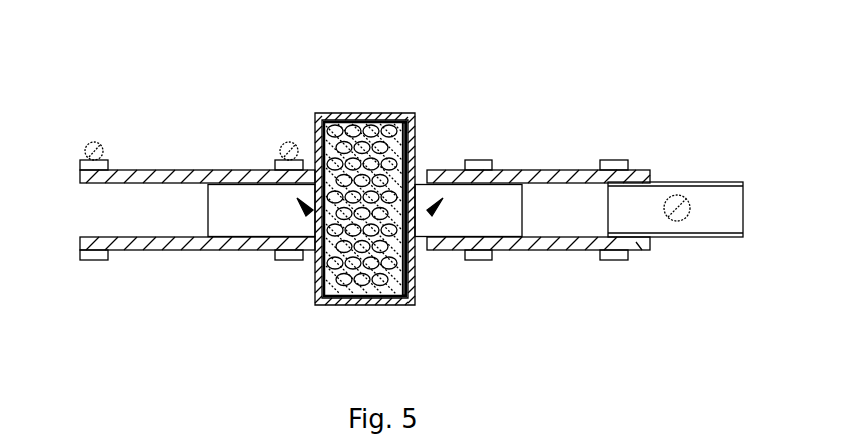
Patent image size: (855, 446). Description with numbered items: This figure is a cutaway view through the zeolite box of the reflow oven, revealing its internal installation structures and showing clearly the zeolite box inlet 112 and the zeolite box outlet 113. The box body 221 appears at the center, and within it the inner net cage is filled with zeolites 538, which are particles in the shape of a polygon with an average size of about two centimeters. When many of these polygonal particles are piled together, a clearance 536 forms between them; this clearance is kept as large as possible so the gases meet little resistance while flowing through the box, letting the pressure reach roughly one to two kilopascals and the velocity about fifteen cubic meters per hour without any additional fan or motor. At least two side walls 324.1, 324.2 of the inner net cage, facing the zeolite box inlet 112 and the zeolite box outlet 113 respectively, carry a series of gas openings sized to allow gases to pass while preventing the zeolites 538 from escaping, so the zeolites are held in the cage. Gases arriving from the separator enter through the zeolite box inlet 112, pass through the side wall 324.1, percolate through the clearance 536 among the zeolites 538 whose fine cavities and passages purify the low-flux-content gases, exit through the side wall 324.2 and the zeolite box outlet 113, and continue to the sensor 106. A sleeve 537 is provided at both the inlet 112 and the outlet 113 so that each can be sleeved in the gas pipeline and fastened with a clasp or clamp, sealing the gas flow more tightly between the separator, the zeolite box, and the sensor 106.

The sleeve 537 is at (256, 189).
The side wall 324.1 is at (312, 122).
The side wall 324.2 is at (414, 124).
The clearance 536 is at (347, 121).
The zeolites 538 is at (385, 125).
The box body 221 is at (360, 306).
The zeolite box inlet 112 is at (293, 196).
The zeolite box outlet 113 is at (447, 196).
The sensor 106 is at (705, 207).